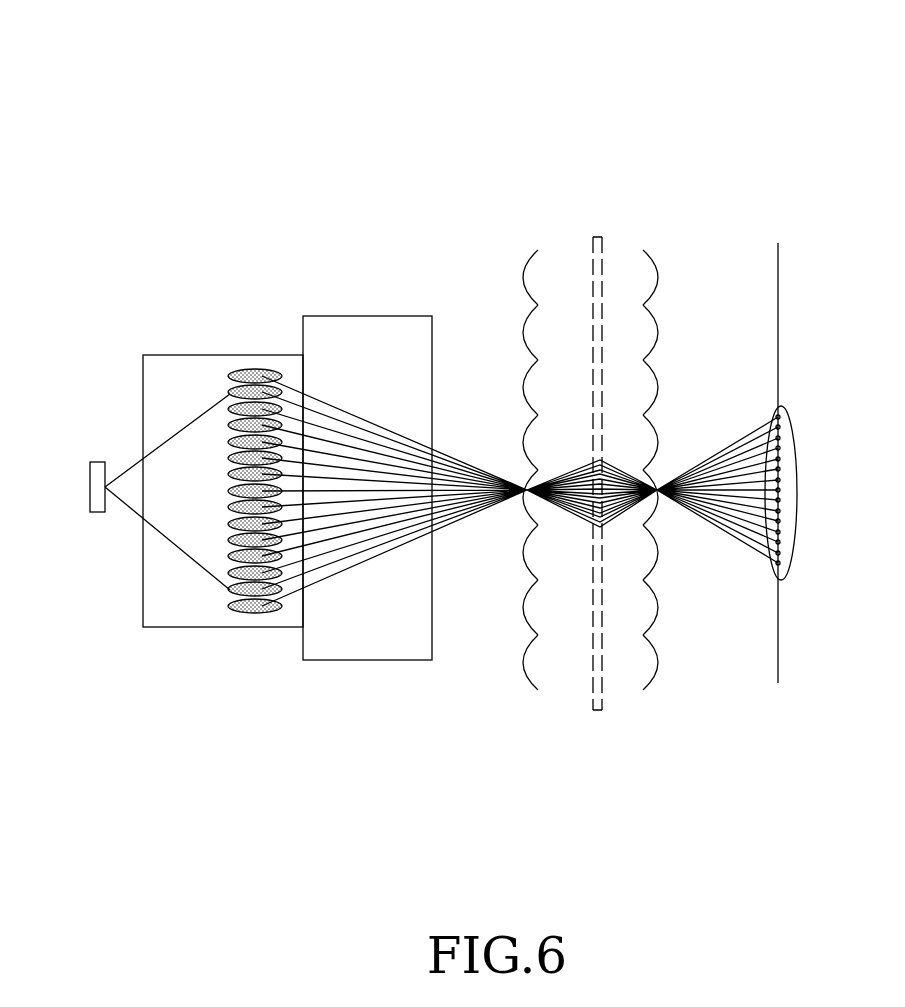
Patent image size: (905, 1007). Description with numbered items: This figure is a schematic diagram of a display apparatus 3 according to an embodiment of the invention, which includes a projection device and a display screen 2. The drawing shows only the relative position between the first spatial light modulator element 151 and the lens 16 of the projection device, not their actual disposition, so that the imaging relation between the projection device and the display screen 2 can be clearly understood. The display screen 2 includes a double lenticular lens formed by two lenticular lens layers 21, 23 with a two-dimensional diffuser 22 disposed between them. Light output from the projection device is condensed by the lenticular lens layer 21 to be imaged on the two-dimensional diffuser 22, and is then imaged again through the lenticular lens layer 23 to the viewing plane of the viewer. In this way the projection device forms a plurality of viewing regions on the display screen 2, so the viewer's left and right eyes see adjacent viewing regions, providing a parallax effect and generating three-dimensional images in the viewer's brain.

The display apparatus 3 is at (272, 86).
The first spatial light modulator element 151 is at (100, 462).
The lens 16 is at (377, 316).
The display screen 2 is at (523, 186).
The lenticular lens layer 21 is at (527, 263).
The 2D diffuser 22 is at (597, 236).
The lenticular lens layer 23 is at (653, 263).